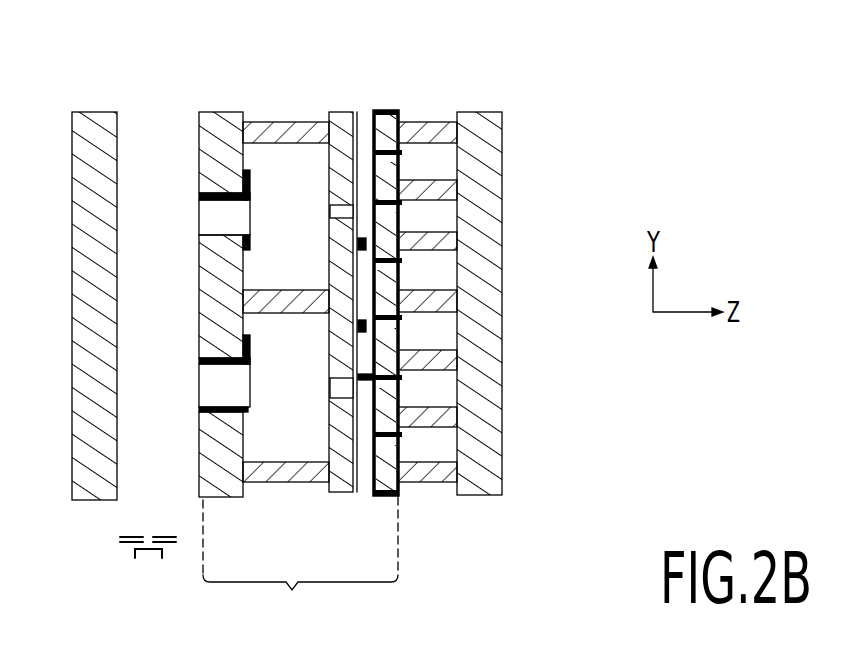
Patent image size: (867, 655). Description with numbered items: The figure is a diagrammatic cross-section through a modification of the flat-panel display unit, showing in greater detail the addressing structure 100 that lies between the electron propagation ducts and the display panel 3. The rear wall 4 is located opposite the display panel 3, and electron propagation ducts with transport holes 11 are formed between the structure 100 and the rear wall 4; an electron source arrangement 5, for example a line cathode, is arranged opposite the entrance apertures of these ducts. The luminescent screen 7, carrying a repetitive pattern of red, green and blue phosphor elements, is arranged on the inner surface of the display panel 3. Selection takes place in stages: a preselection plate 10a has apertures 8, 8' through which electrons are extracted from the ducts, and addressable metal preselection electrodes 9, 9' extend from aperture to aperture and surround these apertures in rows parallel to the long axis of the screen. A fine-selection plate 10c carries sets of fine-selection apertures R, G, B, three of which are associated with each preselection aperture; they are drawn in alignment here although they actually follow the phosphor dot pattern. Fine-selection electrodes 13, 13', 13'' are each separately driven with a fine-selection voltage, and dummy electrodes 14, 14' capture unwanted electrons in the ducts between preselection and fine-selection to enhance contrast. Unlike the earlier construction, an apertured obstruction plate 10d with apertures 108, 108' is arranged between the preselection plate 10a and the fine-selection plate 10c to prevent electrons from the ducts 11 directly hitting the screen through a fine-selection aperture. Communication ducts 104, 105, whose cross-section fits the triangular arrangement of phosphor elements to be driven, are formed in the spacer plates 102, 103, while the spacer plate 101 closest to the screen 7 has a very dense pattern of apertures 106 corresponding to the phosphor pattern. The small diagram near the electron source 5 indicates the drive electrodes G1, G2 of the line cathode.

The rear wall 4 is at (72, 253).
The cavity (transport hole) 11 is at (142, 133).
The preselection plate 10a is at (224, 488).
The aperture 8 is at (236, 144).
The aperture 8' is at (201, 452).
The preselection electrode 9 is at (262, 222).
The preselection electrode 9' is at (265, 346).
The spacer plate 103 is at (288, 122).
The communication duct 104 is at (303, 178).
The intermediate wall 10d is at (342, 492).
The aperture of obstruction plate 108 is at (353, 217).
The slot 108' is at (312, 410).
The spacer plate 102 is at (369, 205).
The communication duct 105 is at (367, 492).
The fine-selection aperture (red) R is at (407, 118).
The fine-selection electrode 13 is at (412, 272).
The fine-selection electrode 13' is at (473, 206).
The fine-selection electrode 13'' is at (477, 330).
The dummy electrode 14 is at (476, 208).
The dummy electrode 14' is at (478, 376).
The luminescent screen 7 is at (443, 130).
The aperture 106 is at (442, 442).
The spacer plate (flu spacer plate) 101 is at (440, 483).
The fine-selection plate 10c is at (387, 495).
The fine-selection aperture (green) G is at (402, 227).
The fine-selection aperture (blue) B is at (402, 279).
The display panel 3 is at (483, 143).
The active selection electrode system (addressing structure) 100 is at (300, 563).
The electrode G1 is at (126, 545).
The electrode G2 is at (124, 537).
The electron source arrangement 5 is at (153, 560).